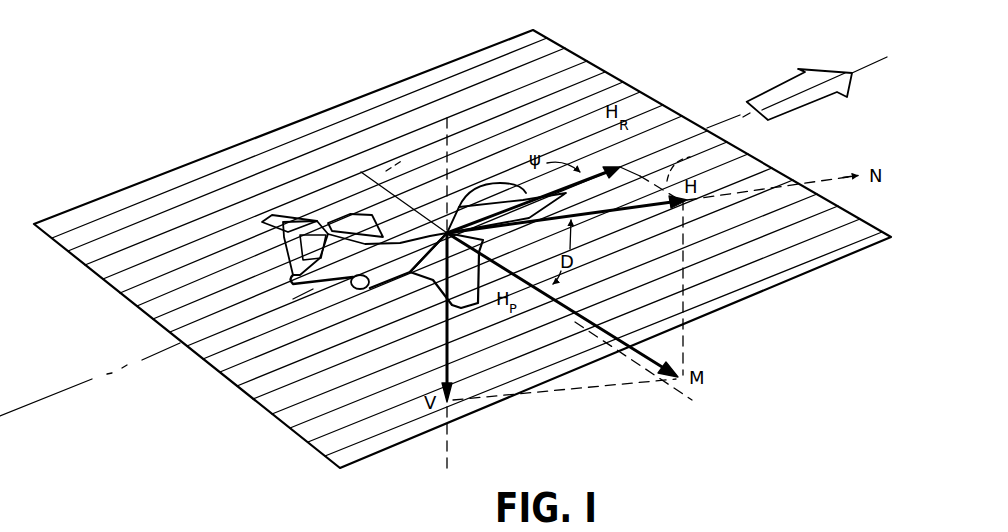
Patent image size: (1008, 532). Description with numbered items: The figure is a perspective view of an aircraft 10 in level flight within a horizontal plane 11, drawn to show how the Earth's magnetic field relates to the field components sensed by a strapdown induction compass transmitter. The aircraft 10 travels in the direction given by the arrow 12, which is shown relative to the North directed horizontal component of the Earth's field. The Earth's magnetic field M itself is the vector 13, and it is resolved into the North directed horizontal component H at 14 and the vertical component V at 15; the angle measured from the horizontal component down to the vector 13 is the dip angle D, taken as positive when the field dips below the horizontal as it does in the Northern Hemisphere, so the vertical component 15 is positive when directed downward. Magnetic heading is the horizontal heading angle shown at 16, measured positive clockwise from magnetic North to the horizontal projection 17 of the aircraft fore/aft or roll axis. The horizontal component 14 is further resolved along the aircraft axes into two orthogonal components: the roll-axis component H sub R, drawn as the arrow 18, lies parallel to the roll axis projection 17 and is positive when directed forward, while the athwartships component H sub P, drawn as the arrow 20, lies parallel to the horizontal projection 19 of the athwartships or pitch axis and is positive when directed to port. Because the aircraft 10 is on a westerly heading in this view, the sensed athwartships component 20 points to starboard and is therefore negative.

The aircraft 10 is at (396, 292).
The horizontal plane 11 is at (546, 34).
The arrow showing direction of flight 12 is at (766, 91).
The Earth's magnetic field vector M 13 is at (579, 303).
The North directed horizontal component H 14 is at (623, 216).
The vertical component V 15 is at (440, 351).
The magnetic heading angle ψ 16 is at (690, 163).
The horizontal projection of aircraft fore/aft or roll axis 17 is at (270, 305).
The arrow showing component H_R 18 is at (620, 165).
The horizontal projection of aircraft athwartships or pitch axis 19 is at (444, 163).
The arrow showing component H_P 20 is at (463, 248).